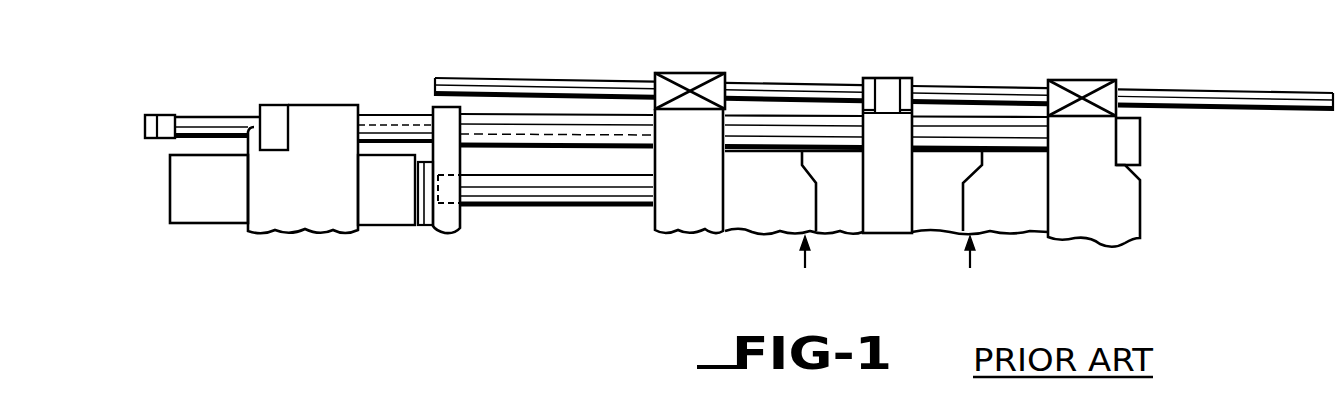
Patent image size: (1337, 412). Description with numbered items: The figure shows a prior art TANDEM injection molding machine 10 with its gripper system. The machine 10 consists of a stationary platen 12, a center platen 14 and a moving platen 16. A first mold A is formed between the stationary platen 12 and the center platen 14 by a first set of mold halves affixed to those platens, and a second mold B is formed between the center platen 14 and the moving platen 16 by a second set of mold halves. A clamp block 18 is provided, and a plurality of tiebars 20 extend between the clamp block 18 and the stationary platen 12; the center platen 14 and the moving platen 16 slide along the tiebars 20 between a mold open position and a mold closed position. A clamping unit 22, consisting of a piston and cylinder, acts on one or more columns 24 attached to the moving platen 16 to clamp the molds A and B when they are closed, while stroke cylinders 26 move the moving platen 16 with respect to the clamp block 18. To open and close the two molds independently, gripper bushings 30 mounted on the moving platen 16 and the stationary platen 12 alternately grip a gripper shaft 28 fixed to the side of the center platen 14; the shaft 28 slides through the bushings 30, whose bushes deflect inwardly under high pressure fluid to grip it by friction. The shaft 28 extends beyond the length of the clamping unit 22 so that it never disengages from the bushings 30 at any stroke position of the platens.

The injection molding machine 10 is at (641, 276).
The stationary platen 12 is at (1115, 212).
The center platen 14 is at (888, 200).
The moving platen 16 is at (692, 213).
The clamp block 18 is at (323, 110).
The tiebars 20 is at (530, 127).
The clamping unit 22 is at (193, 207).
The columns 24 is at (533, 198).
The stroke cylinders 26 is at (202, 121).
The gripper shaft 28 is at (780, 88).
The gripper bushings 30 is at (687, 82).
The first mold A is at (971, 267).
The second mold B is at (804, 267).